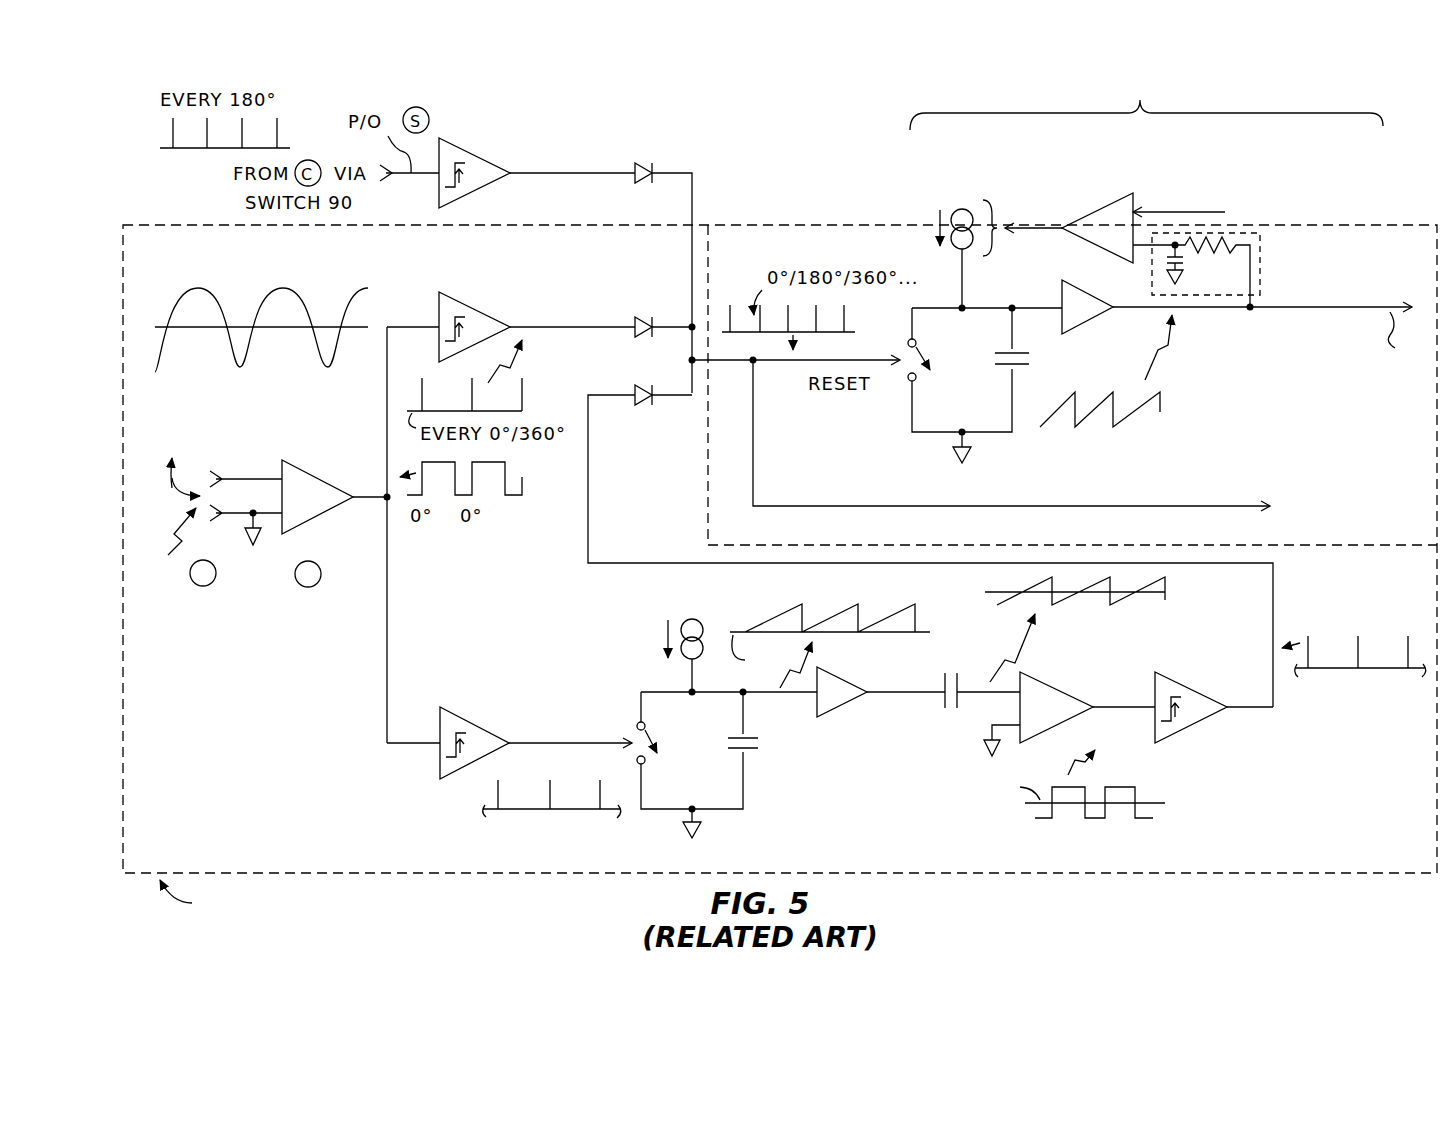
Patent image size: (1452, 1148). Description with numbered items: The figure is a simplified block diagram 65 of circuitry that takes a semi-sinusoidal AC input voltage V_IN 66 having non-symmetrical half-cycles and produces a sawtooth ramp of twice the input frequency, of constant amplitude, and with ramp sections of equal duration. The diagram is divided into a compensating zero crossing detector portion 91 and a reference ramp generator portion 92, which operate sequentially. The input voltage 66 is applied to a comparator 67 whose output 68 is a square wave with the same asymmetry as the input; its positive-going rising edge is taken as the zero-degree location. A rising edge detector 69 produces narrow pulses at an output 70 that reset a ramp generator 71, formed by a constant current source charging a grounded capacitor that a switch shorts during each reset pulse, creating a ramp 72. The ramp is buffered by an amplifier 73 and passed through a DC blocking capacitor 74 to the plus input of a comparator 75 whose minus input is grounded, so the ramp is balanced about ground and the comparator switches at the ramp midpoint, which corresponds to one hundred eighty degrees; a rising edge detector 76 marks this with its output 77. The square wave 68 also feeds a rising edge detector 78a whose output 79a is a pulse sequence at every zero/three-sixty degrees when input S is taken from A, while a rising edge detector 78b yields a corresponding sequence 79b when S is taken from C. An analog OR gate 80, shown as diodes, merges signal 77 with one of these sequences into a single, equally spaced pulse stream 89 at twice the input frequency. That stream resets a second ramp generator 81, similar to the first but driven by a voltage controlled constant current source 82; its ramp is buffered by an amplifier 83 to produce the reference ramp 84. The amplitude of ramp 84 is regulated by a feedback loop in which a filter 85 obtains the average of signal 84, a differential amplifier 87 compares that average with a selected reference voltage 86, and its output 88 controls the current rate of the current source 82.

The simplified block diagram 65 is at (780, 510).
The AC input voltage V_IN 66 is at (198, 288).
The comparator 67 is at (323, 470).
The comparator output 68 is at (387, 597).
The rising edge detector 69 is at (495, 728).
The rising edge detector output 70 is at (592, 740).
The ramp generator 71 is at (657, 800).
The ramp 72 is at (790, 697).
The amplifier 73 is at (845, 710).
The DC blocking capacitor 74 is at (950, 672).
The comparator 75 is at (1058, 684).
The rising edge detector 76 is at (1212, 720).
The rising edge detector output 77 is at (1273, 690).
The rising edge detector 78a is at (504, 322).
The rising edge detector 78b is at (504, 168).
The output pulse sequence 79a is at (521, 332).
The pulse sequence 79b is at (572, 192).
The analog OR gate 80 is at (655, 192).
The ramp generator 81 is at (927, 425).
The voltage controlled constant current source 82 is at (962, 279).
The amplifier 83 is at (1092, 323).
The reference ramp 84 is at (1392, 304).
The filter 85 is at (1150, 292).
The reference voltage 86 is at (1260, 175).
The differential amplifier 87 is at (1133, 206).
The amplitude regulator output 88 is at (1000, 226).
The pulse stream 89 is at (780, 368).
The compensating zero crossing detector portion 91 is at (1190, 874).
The reference ramp generator portion 92 is at (1072, 310).